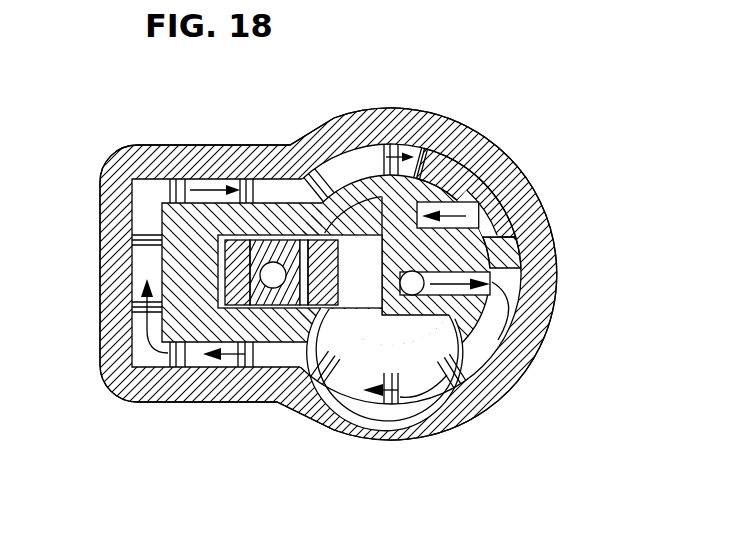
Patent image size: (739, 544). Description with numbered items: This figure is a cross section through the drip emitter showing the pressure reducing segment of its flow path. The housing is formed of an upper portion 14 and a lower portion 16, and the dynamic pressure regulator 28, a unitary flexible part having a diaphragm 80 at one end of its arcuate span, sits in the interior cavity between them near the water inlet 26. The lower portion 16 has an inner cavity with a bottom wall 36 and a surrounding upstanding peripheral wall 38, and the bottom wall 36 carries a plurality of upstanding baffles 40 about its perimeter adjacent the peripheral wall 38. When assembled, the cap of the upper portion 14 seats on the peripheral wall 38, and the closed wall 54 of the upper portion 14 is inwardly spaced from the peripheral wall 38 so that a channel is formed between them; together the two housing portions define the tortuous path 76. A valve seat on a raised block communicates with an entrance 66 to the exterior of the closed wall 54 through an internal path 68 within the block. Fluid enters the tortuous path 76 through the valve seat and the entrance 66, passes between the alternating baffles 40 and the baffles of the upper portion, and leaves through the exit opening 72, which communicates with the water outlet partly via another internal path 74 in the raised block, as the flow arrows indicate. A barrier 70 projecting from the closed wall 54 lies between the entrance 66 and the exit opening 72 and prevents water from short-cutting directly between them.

The upper portion 14 is at (250, 192).
The lower portion 16 is at (110, 150).
The water inlet 26 is at (282, 257).
The dynamic pressure regulator 28 is at (364, 237).
The bottom wall 36 is at (140, 198).
The peripheral wall 38 is at (383, 106).
The baffles 40 is at (474, 416).
The closed wall 54 is at (143, 267).
The entrance 66 is at (558, 296).
The internal path 68 is at (490, 310).
The barrier 70 is at (510, 232).
The exit opening 72 is at (495, 195).
The internal path 74 is at (433, 190).
The tortuous path 76 is at (197, 356).
The diaphragm 80 is at (366, 334).